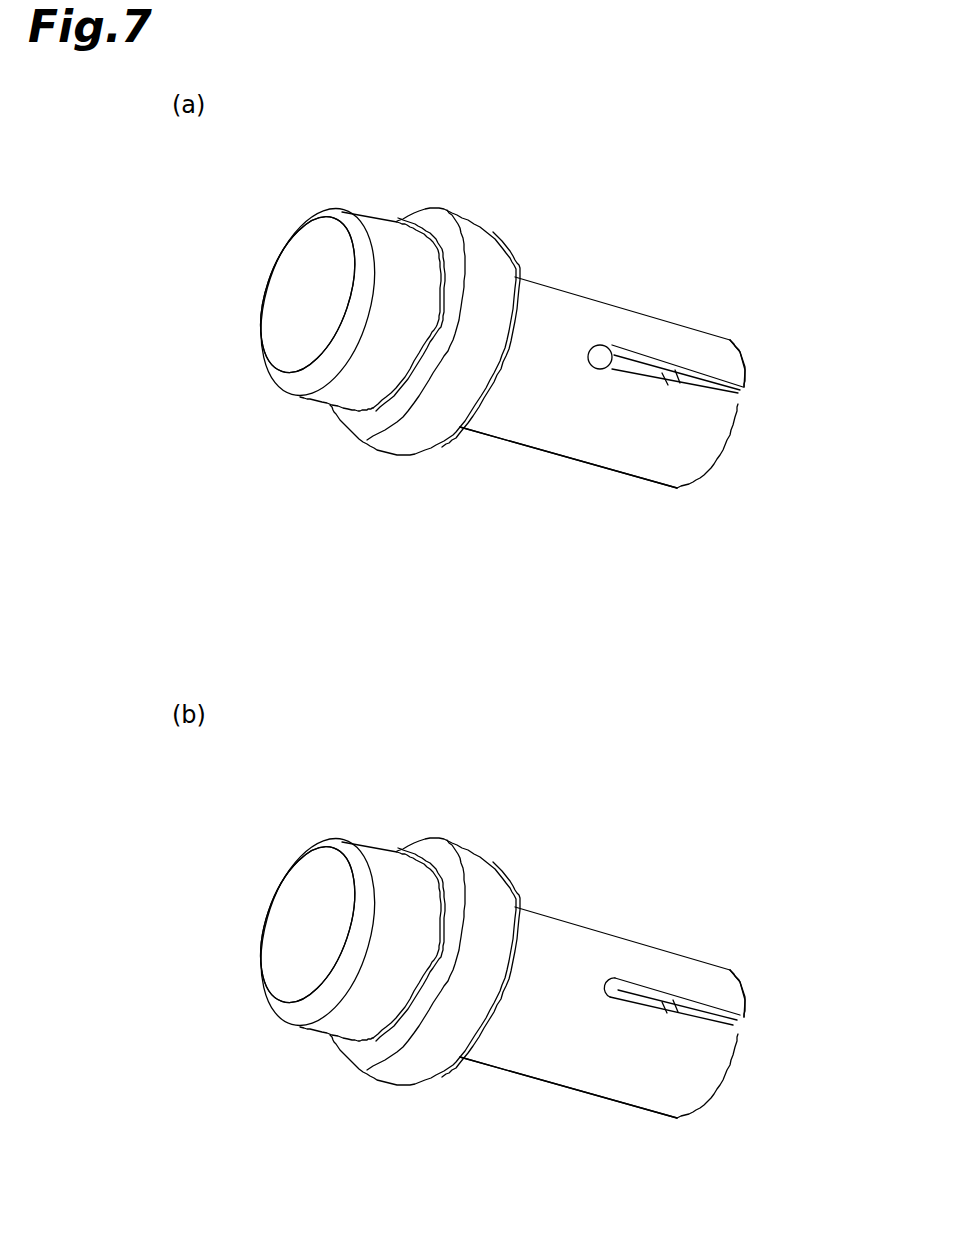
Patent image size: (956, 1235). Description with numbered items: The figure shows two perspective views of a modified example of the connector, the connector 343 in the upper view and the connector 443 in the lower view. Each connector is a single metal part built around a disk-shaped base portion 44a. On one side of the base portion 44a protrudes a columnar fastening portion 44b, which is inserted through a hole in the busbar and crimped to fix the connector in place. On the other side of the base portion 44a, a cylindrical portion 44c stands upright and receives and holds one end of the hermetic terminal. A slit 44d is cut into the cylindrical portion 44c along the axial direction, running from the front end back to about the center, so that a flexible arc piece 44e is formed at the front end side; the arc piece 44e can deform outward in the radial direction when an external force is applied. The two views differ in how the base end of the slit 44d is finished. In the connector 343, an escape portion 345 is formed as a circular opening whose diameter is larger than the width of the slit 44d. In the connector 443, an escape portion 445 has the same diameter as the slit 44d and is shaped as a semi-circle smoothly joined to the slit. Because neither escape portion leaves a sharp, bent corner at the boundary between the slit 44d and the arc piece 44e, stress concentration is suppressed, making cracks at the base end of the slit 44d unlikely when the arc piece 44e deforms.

The connector 343 is at (665, 210).
The connector 443 is at (665, 838).
The base portion 44a is at (473, 223).
The fastening portion 44b is at (332, 390).
The cylindrical portion 44c is at (606, 298).
The slit 44d is at (727, 395).
The arc piece 44e is at (772, 327).
The escape portion 345 is at (617, 363).
The escape portion 445 is at (653, 985).